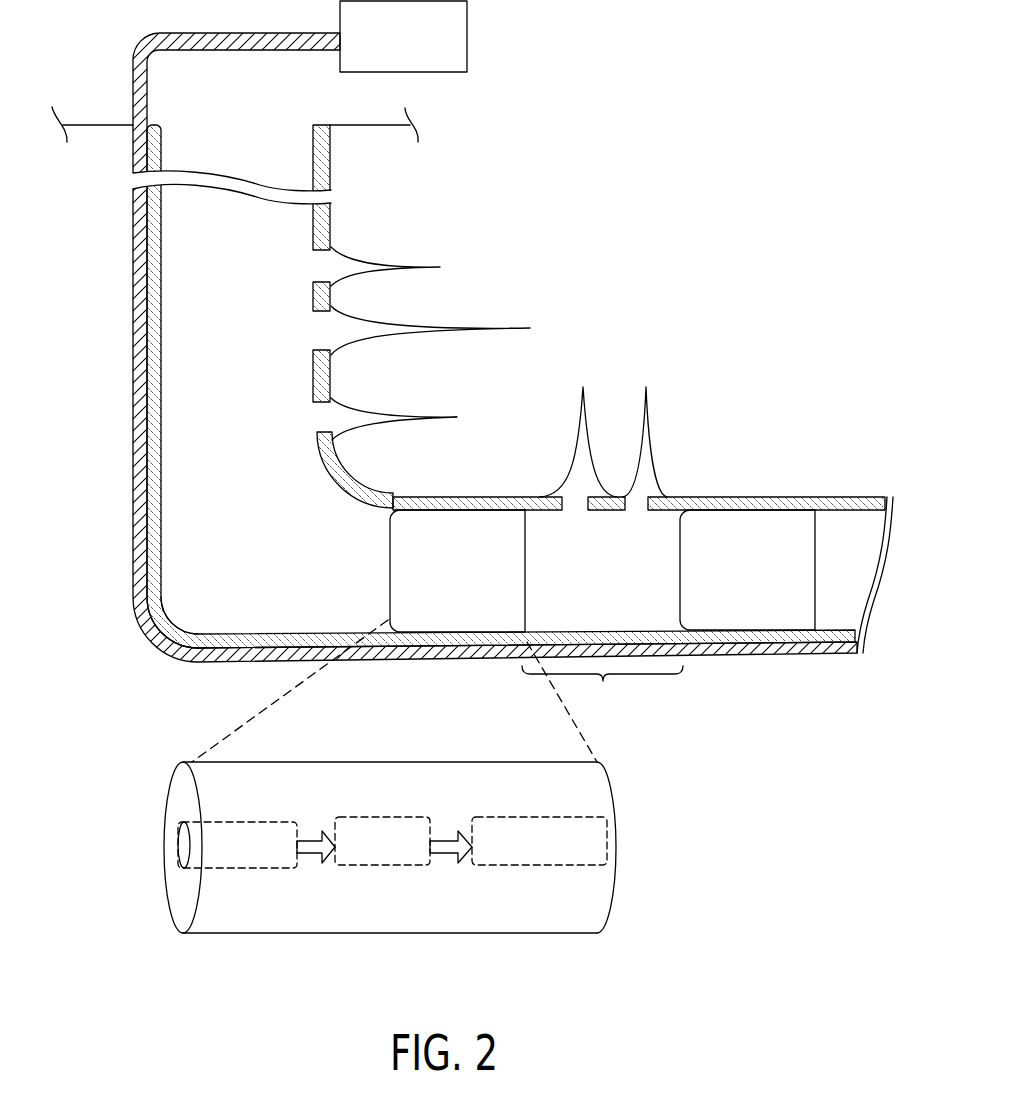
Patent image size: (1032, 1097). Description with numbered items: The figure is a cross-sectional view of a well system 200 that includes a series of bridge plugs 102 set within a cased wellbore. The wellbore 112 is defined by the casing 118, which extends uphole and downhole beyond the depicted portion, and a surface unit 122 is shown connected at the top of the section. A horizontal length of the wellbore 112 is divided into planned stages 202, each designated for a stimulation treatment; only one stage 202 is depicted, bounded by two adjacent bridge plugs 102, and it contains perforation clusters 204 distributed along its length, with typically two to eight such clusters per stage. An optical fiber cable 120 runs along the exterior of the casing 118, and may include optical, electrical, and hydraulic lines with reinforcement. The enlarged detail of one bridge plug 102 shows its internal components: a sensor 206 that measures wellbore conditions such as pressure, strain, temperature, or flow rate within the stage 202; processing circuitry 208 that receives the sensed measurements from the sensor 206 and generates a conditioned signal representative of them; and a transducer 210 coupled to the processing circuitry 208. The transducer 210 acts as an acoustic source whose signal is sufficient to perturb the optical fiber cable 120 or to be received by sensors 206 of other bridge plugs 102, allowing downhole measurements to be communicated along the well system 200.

The bridge plug 102 is at (460, 517).
The wellbore 112 is at (183, 570).
The casing 118 is at (158, 464).
The optical fiber cable 120 is at (160, 638).
The controller 122 is at (415, 47).
The well system 200 is at (672, 143).
The stage 202 is at (602, 694).
The perforation cluster 204 is at (645, 457).
The sensor 206 is at (277, 868).
The processing circuitry 208 is at (402, 866).
The transducer 210 is at (553, 866).